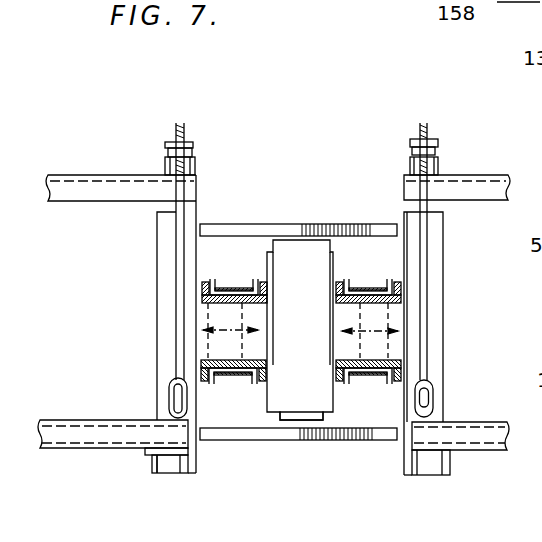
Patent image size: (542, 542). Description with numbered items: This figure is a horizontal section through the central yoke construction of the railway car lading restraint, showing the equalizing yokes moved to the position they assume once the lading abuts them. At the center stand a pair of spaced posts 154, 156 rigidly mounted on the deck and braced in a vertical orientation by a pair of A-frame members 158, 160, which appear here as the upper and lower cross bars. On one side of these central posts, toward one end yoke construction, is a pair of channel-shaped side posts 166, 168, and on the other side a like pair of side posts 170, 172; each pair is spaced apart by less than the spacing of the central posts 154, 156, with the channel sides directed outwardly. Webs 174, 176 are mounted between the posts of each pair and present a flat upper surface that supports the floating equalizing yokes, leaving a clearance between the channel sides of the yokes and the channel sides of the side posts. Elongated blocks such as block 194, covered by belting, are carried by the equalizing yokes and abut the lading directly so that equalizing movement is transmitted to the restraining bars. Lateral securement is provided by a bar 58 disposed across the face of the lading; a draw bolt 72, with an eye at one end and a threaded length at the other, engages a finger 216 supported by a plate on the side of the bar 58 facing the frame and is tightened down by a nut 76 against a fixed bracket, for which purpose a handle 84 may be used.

The bar 58 is at (488, 450).
The draw bolt 72 is at (423, 357).
The nut 76 is at (435, 151).
The handle 84 is at (435, 142).
The post 154 is at (334, 418).
The post 156 is at (327, 242).
The A-frame member 158 is at (247, 433).
The A-frame member 160 is at (252, 232).
The side post 166 is at (227, 287).
The side post 168 is at (233, 373).
The side post 170 is at (365, 287).
The side post 172 is at (367, 380).
The web 174 is at (200, 333).
The web 176 is at (407, 313).
The elongated block 194 is at (168, 462).
The finger 216 is at (432, 397).